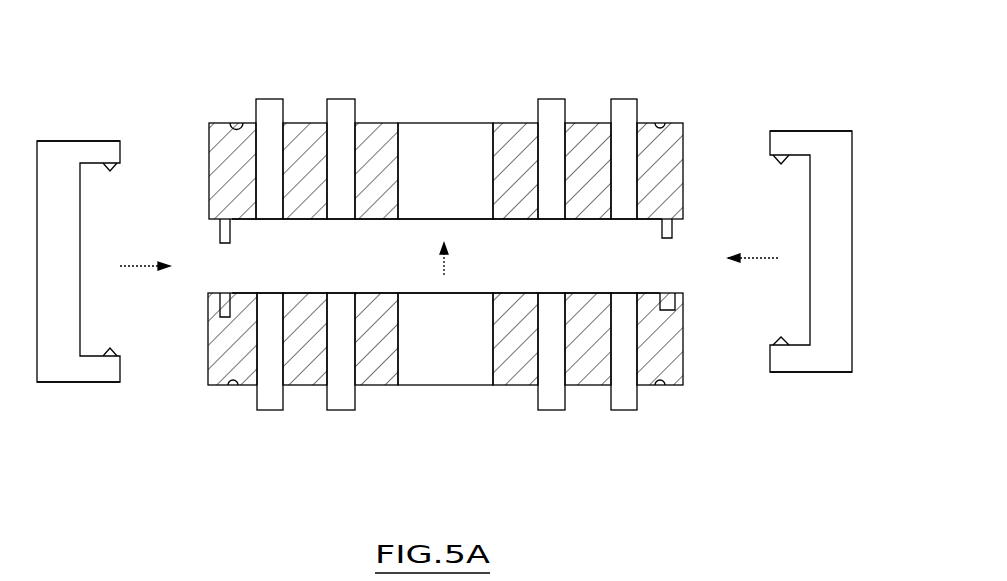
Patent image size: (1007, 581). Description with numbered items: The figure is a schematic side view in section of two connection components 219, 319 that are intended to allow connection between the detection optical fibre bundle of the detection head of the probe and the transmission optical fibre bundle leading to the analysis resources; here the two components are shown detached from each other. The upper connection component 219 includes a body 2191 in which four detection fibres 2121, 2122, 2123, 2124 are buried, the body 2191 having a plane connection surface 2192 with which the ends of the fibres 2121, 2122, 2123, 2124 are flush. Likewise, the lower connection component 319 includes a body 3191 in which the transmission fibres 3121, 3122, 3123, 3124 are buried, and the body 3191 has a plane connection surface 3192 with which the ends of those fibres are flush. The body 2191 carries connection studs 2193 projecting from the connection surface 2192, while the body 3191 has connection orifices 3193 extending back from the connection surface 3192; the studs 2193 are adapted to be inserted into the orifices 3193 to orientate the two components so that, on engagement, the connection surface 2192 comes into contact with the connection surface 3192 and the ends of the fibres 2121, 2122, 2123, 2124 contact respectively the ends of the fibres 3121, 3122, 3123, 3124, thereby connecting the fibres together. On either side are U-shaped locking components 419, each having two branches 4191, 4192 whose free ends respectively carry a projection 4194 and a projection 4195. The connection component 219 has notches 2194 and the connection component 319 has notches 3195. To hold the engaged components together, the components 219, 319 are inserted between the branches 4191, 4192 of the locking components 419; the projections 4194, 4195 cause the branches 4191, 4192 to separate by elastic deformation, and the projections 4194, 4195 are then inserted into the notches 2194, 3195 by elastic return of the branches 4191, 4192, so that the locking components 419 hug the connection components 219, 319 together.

The connection component 219 is at (662, 177).
The body 2191 is at (512, 128).
The plane connection surface 2192 is at (647, 222).
The connection studs 2193 is at (222, 238).
The notches 2194 is at (236, 128).
The detection fibre 2121 is at (343, 100).
The detection fibre 2122 is at (550, 99).
The detection fibre 2123 is at (272, 100).
The detection fibre 2124 is at (628, 99).
The connection component 319 is at (668, 338).
The body 3191 is at (505, 378).
The plane connection surface 3192 is at (647, 302).
The connection orifices 3193 is at (222, 307).
The notches 3195 is at (233, 383).
The transmission fibre 3121 is at (343, 413).
The transmission fibre 3122 is at (548, 413).
The transmission fibre 3123 is at (270, 413).
The transmission fibre 3124 is at (625, 413).
The locking component 419 is at (50, 157).
The branch 4191 is at (100, 157).
The branch 4192 is at (93, 365).
The projection 4194 is at (112, 172).
The projection 4195 is at (105, 350).